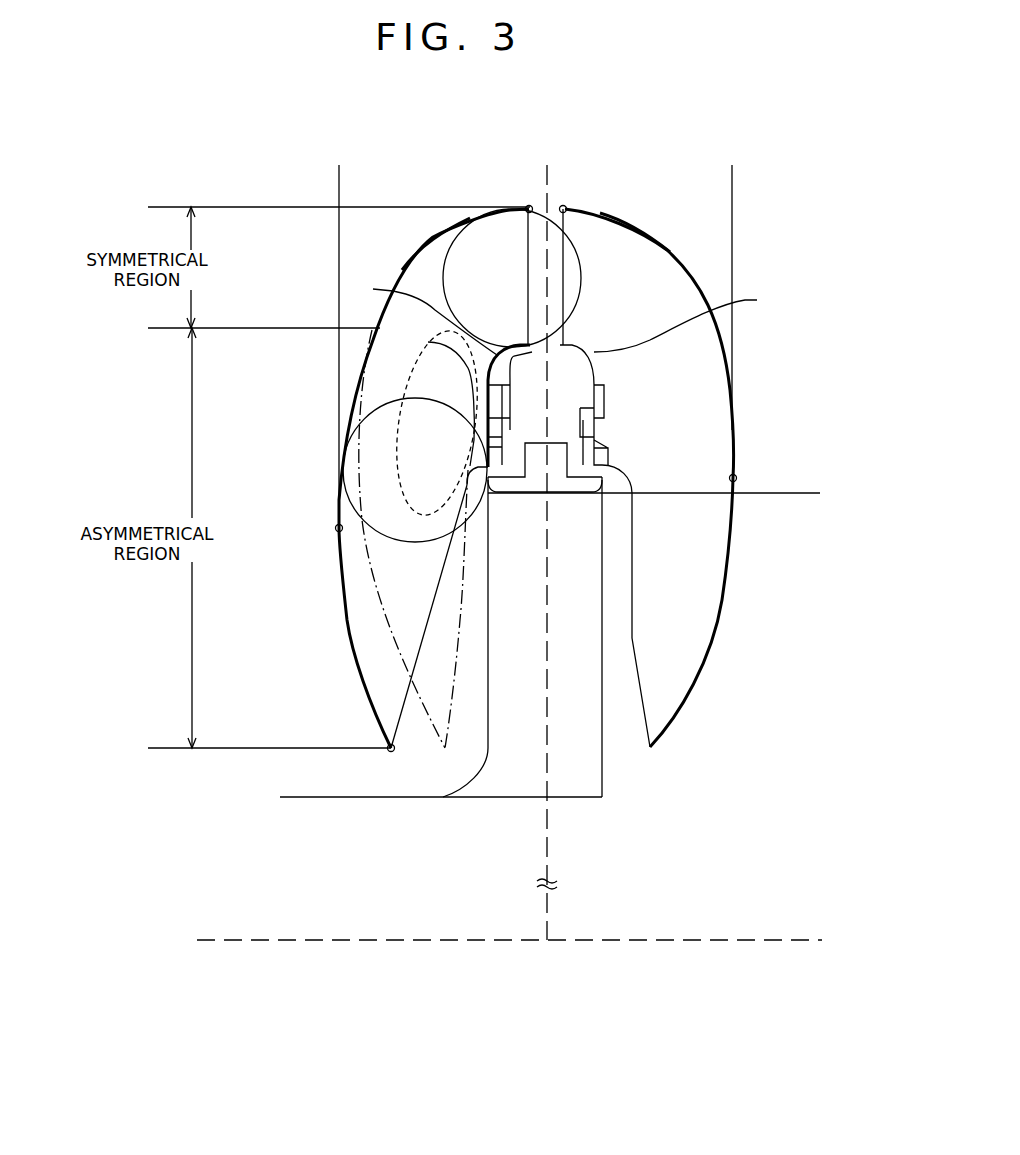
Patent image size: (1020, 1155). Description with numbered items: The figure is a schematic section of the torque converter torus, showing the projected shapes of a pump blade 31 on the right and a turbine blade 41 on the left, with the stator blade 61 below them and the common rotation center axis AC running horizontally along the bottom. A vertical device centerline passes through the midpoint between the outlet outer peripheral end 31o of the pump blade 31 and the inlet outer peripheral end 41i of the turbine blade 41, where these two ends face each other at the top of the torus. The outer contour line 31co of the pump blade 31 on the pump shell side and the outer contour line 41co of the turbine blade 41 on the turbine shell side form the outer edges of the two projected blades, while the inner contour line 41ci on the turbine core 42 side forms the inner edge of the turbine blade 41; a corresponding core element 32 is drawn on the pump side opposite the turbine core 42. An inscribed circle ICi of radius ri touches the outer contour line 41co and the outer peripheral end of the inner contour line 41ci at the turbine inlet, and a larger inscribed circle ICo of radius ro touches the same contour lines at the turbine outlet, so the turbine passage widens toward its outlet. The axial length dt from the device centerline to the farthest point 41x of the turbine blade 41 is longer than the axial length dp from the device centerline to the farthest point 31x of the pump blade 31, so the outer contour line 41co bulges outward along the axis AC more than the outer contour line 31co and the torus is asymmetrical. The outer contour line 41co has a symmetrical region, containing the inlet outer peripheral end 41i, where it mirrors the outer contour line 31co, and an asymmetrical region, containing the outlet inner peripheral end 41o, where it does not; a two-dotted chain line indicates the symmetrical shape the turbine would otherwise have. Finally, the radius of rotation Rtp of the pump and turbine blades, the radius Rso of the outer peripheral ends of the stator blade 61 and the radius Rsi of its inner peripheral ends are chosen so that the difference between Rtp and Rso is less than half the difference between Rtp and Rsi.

The turbine blade 41 is at (346, 573).
The farthest point of the turbine blade 41x is at (337, 528).
The outlet inner peripheral end of the turbine blade 41o is at (390, 750).
The inlet outer peripheral end of the turbine blade 41i is at (526, 202).
The outer contour line of the turbine blade 41co is at (400, 268).
The inner contour line of the turbine blade 41ci is at (447, 344).
The pump blade 31 is at (725, 428).
The farthest point of the pump blade 31x is at (733, 478).
The outlet outer peripheral end of the pump blade 31o is at (564, 205).
The outer contour line of the pump blade 31co is at (668, 250).
The roof surface 32 is at (689, 321).
The turbine core 42 is at (422, 318).
The stator blade 61 is at (603, 778).
The inscribed circle at the turbine inlet ICi is at (580, 292).
The inscribed circle at the turbine outlet ICo is at (397, 534).
The radius of the inlet inscribed circle ri is at (512, 280).
The radius of the outlet inscribed circle ro is at (445, 406).
The length from the device centerline to the turbine blade farthest point dt is at (547, 180).
The length from the device centerline to the pump blade farthest point dp is at (547, 180).
The radius of rotation of the pump blades and turbine blades Rtp is at (235, 940).
The radius of rotation of the stator blade inner peripheral ends Rsi is at (323, 940).
The radius of rotation of the stator blade outer peripheral ends Rso is at (777, 493).
The rotation center axis AC is at (688, 940).